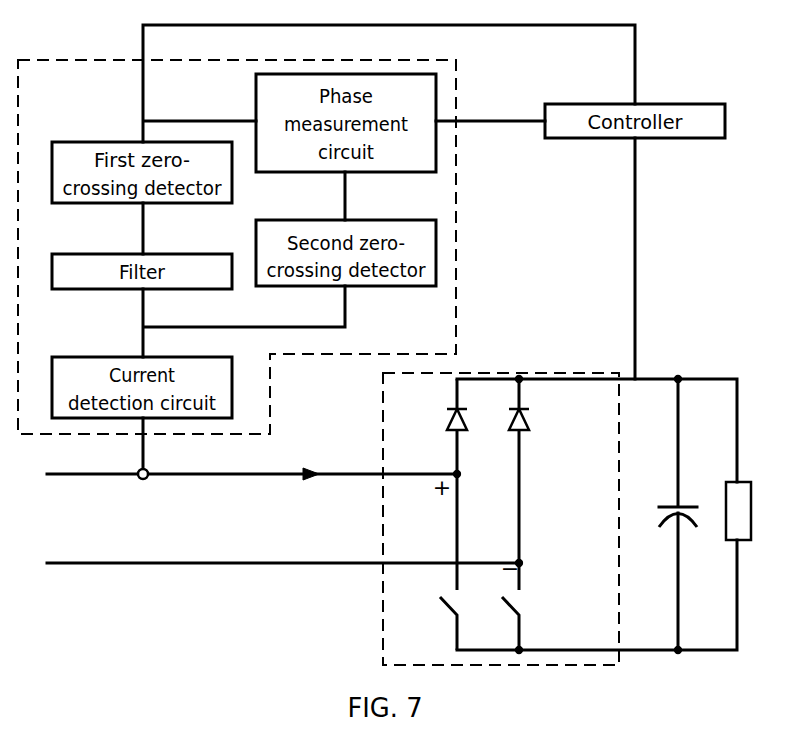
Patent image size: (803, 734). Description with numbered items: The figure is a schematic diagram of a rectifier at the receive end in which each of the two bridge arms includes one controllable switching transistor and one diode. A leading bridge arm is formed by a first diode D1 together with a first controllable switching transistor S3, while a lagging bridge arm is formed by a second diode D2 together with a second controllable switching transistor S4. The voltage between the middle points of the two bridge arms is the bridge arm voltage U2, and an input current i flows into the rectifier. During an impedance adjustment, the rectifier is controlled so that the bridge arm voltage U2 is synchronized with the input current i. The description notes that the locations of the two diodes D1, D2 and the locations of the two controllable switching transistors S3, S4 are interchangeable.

The first diode D1 is at (439, 484).
The second diode D2 is at (541, 484).
The first controllable switching transistor S3 is at (434, 623).
The second controllable switching transistor S4 is at (536, 623).
The bridge arm voltage U2 is at (482, 518).
The input current i is at (309, 487).